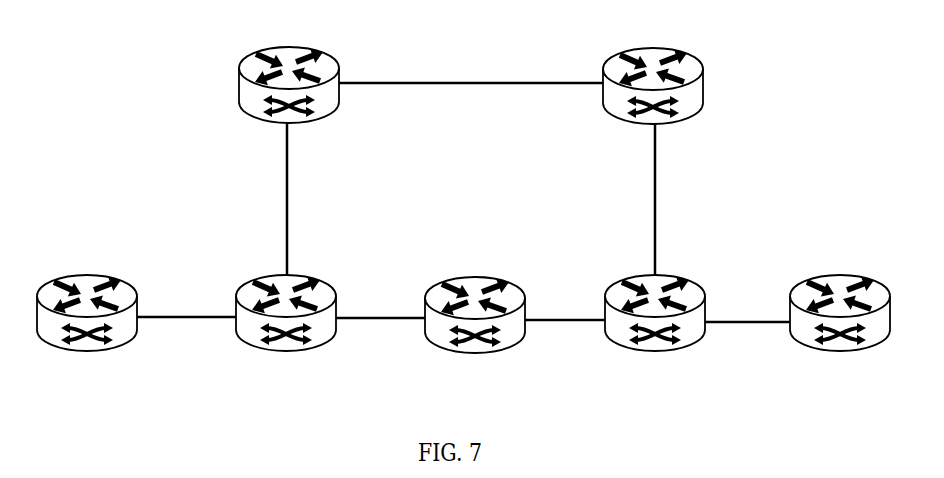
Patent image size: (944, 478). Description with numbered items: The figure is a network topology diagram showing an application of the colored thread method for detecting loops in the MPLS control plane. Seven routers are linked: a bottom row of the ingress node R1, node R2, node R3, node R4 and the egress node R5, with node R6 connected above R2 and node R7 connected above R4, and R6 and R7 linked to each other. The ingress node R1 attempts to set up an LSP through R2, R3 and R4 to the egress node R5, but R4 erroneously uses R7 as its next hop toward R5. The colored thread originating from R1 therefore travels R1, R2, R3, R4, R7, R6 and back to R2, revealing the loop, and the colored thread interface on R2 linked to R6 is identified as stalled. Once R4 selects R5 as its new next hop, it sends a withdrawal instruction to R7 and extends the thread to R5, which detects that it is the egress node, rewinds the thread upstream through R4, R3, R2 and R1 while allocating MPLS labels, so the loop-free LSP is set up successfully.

The ingress node R1 is at (87, 330).
The node R2 is at (286, 330).
The node R3 is at (475, 331).
The node R4 is at (655, 330).
The egress node R5 is at (840, 330).
The node R6 is at (289, 104).
The next-hop node R7 is at (653, 105).